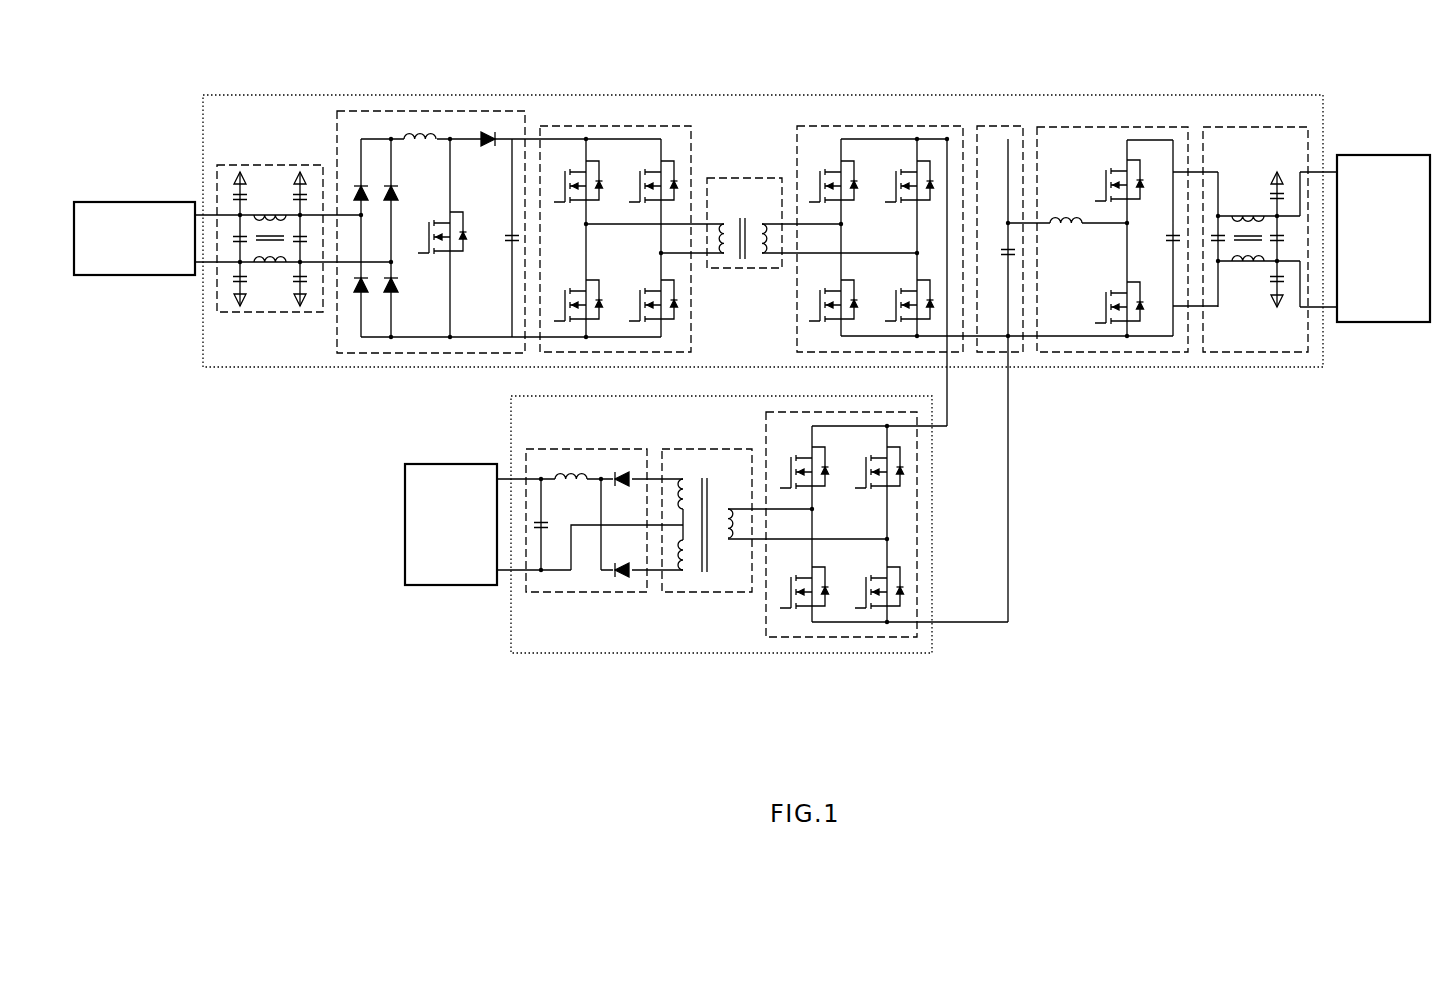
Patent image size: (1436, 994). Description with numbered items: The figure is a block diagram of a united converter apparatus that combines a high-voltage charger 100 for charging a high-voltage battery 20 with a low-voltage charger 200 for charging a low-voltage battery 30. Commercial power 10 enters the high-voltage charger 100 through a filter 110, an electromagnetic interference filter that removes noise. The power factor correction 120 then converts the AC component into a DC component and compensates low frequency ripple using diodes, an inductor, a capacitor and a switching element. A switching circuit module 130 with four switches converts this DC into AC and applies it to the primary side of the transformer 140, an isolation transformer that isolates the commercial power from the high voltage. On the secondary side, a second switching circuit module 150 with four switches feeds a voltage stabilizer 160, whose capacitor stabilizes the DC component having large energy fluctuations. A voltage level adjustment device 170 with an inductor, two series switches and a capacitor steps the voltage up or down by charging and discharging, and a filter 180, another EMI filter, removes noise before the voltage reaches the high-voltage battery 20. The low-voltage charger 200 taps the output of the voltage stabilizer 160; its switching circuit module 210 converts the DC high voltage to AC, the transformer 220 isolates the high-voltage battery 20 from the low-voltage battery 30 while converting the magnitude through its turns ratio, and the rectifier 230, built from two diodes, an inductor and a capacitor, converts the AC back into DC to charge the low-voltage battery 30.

The commercial power 10 is at (135, 202).
The high-voltage battery 20 is at (1383, 155).
The low-voltage battery 30 is at (451, 585).
The high-voltage charger 100 is at (230, 95).
The filter 110 is at (270, 165).
The power factor correction 120 is at (430, 111).
The switching circuit module 130 is at (616, 126).
The transformer 140 is at (742, 178).
The switching circuit module 150 is at (884, 126).
The voltage stabilizer 160 is at (1005, 126).
The voltage level adjustment device 170 is at (1127, 127).
The filter 180 is at (1268, 127).
The low-voltage charger 200 is at (722, 653).
The switching circuit module 210 is at (840, 637).
The transformer 220 is at (585, 592).
The rectifier 230 is at (705, 592).